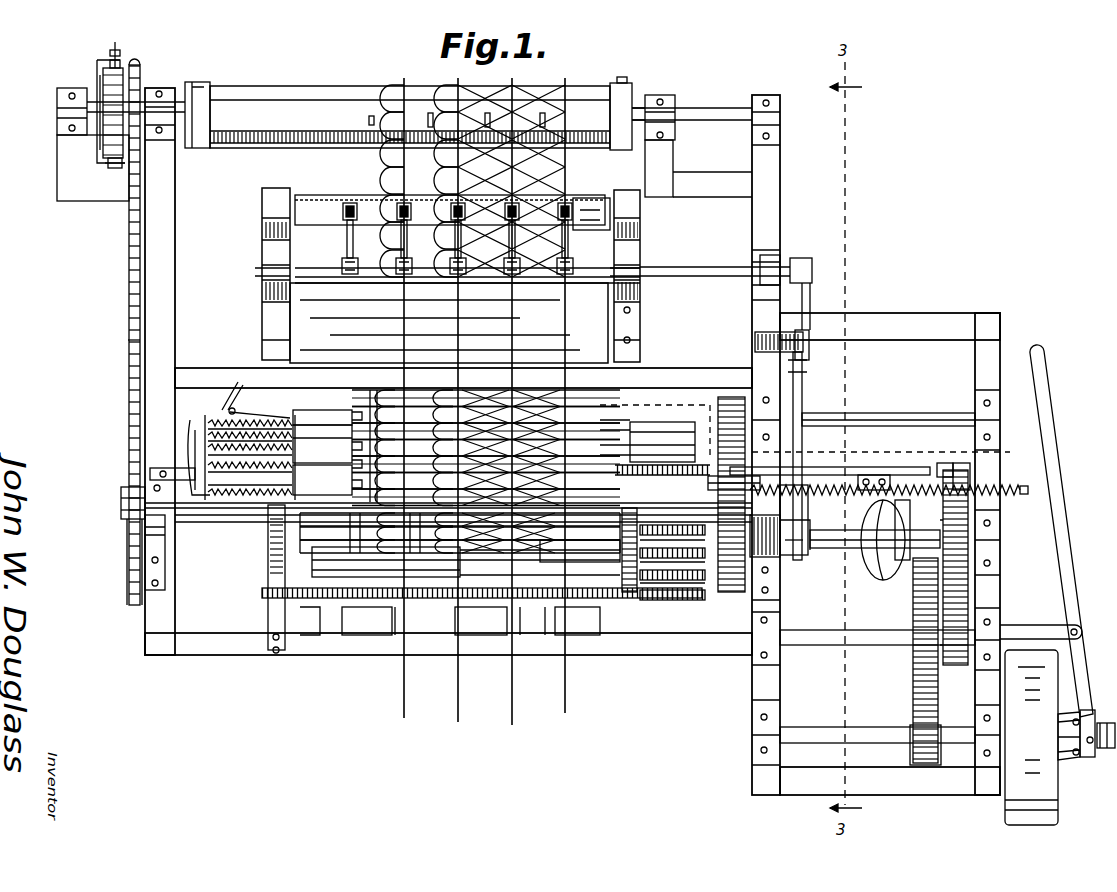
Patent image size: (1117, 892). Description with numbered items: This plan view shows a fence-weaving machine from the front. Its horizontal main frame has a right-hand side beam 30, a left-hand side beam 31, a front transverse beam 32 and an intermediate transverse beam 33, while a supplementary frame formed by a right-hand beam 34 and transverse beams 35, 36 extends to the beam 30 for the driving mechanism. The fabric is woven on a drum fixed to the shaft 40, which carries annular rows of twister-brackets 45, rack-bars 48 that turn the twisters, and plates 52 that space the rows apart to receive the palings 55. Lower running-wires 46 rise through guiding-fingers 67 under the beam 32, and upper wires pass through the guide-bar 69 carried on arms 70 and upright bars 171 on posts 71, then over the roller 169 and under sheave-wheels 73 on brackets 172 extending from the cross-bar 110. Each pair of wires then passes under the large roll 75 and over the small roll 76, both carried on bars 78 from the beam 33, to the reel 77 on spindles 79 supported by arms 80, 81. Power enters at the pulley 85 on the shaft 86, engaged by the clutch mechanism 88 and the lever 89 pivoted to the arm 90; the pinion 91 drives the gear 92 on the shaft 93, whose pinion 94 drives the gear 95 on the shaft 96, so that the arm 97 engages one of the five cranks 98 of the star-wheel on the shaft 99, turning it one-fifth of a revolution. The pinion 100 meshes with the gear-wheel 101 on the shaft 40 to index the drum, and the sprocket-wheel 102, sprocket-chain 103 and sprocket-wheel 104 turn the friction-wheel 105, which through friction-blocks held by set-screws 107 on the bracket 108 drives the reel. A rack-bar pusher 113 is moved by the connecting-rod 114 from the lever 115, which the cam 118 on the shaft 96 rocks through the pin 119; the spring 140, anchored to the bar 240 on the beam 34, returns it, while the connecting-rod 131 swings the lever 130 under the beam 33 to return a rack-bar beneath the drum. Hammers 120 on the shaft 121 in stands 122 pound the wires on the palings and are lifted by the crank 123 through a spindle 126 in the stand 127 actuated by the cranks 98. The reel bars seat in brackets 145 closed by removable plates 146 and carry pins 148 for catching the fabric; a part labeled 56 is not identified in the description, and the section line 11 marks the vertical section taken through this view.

The section line 11 is at (804, 426).
The right-hand side beam 30 is at (774, 228).
The left-hand side beam 31 is at (175, 292).
The front transverse beam 32 is at (210, 656).
The intermediate transverse beam 33 is at (198, 368).
The right-hand beam 34 is at (980, 372).
The transverse beam 35 is at (890, 326).
The transverse beam 36 is at (890, 781).
The drum shaft 40 is at (240, 518).
The twister-brackets 45 is at (335, 446).
The running-wires 46 is at (404, 82).
The twister-actuating rack-bar 48 is at (690, 608).
The plate 52 is at (456, 448).
The palings 55 is at (386, 168).
The crossed strings 56 is at (566, 160).
The guiding-fingers 67 is at (342, 622).
The guide-bar 69 is at (264, 594).
The arm 70 is at (268, 562).
The posts 71 is at (166, 555).
The sheave-wheels 73 is at (580, 545).
The large roll 75 is at (449, 323).
The small roll 76 is at (467, 239).
The reel 77 is at (410, 117).
The bars 78 is at (262, 246).
The spindles 79 is at (57, 118).
The arm 80 is at (674, 158).
The arm 81 is at (93, 168).
The pulley 85 is at (1052, 786).
The shaft 86 is at (860, 727).
The clutch mechanism 88 is at (1072, 718).
The lever 89 is at (1070, 540).
The arm 90 is at (1027, 625).
The pinion 91 is at (938, 735).
The gear 92 is at (913, 610).
The shaft 93 is at (862, 645).
The pinion 94 is at (946, 666).
The gear 95 is at (968, 505).
The shaft 96 is at (828, 553).
The arm 97 is at (794, 520).
The cranks 98 is at (800, 380).
The shaft 99 is at (882, 414).
The pinion 100 is at (712, 402).
The gear-wheel 101 is at (728, 600).
The sprocket-wheel 102 is at (127, 573).
The sprocket-chain 103 is at (128, 340).
The sprocket-wheel 104 is at (140, 65).
The friction-wheel 105 is at (108, 95).
The set-screws 107 is at (115, 45).
The bracket 108 is at (108, 155).
The cross-bar 110 is at (580, 512).
The rack-bar pusher 113 is at (734, 484).
The connecting-rod 114 is at (878, 462).
The lever 115 is at (900, 505).
The cam 118 is at (870, 570).
The pin 119 is at (873, 516).
The hammers 120 is at (576, 202).
The shaft 121 is at (686, 270).
The stands 122 is at (264, 270).
The crank 123 is at (806, 290).
The spindle 126 is at (805, 335).
The stand 127 is at (755, 344).
The lever 130 is at (222, 414).
The connecting-rod 131 is at (266, 410).
The spring 140 is at (914, 476).
The bracket 145 is at (200, 105).
The removable plate 146 is at (621, 86).
The pins 148 is at (369, 121).
The roller 169 is at (466, 562).
The upright bars 171 is at (262, 522).
The brackets 172 is at (580, 533).
The bar 240 is at (965, 490).